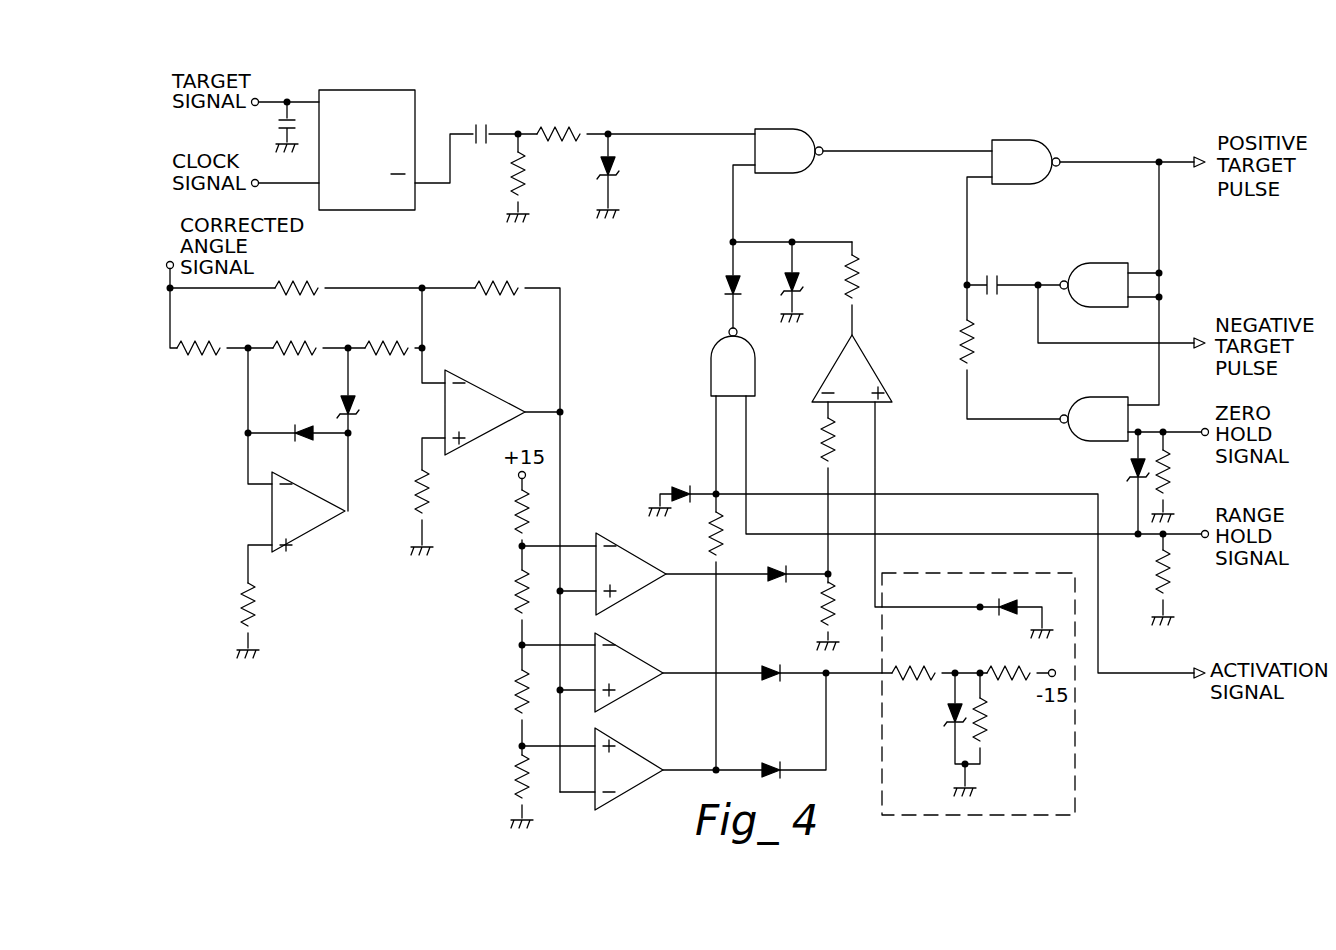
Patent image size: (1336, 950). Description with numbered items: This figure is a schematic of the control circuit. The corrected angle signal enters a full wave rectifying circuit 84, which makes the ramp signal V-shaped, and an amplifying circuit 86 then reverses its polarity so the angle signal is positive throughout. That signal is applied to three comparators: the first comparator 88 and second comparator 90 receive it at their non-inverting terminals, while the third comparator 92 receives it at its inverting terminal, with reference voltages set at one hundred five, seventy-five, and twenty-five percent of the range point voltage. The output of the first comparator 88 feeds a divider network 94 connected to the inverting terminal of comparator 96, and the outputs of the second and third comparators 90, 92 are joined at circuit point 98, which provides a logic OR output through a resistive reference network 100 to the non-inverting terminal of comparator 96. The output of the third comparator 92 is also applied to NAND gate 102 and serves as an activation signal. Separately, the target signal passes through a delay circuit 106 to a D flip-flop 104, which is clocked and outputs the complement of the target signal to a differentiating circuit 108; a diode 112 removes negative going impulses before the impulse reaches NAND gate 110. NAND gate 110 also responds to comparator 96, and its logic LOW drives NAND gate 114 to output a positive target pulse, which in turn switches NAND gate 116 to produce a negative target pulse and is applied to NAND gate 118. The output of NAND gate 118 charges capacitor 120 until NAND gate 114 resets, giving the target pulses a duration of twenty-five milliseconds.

The full wave rectifying circuit 84 is at (240, 358).
The amplifying circuit 86 is at (415, 408).
The first comparator 88 is at (622, 497).
The second comparator 90 is at (630, 643).
The third comparator 92 is at (625, 746).
The divider network 94 is at (812, 578).
The comparator 96 is at (870, 366).
The circuit point 98 is at (830, 680).
The resistive reference network 100 is at (1078, 770).
The NAND gate 102 is at (709, 368).
The D flip-flop 104 is at (415, 120).
The delay circuit 106 is at (300, 100).
The differentiating circuit 108 is at (522, 130).
The NAND gate 110 is at (786, 129).
The diode 112 is at (618, 170).
The NAND gate 114 is at (1029, 140).
The NAND gate 116 is at (1072, 262).
The NAND gate 118 is at (1090, 398).
The capacitor 120 is at (980, 282).